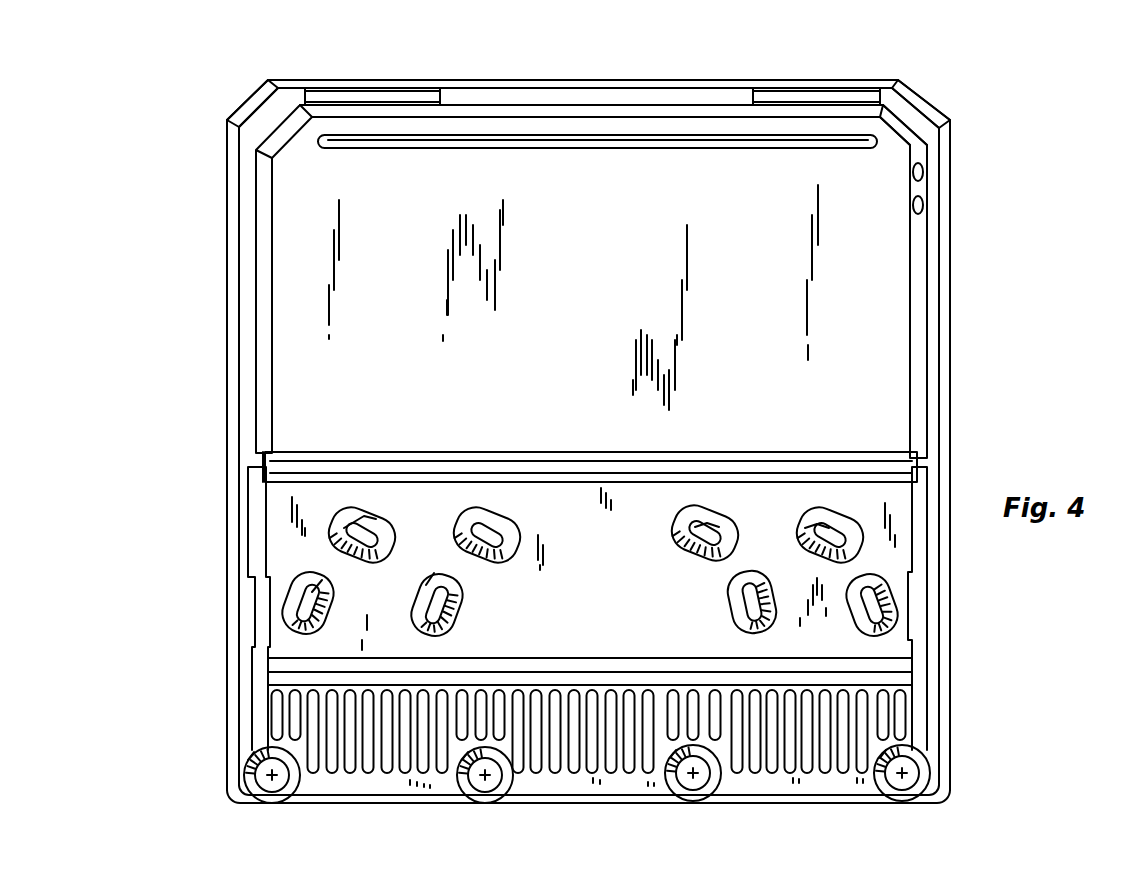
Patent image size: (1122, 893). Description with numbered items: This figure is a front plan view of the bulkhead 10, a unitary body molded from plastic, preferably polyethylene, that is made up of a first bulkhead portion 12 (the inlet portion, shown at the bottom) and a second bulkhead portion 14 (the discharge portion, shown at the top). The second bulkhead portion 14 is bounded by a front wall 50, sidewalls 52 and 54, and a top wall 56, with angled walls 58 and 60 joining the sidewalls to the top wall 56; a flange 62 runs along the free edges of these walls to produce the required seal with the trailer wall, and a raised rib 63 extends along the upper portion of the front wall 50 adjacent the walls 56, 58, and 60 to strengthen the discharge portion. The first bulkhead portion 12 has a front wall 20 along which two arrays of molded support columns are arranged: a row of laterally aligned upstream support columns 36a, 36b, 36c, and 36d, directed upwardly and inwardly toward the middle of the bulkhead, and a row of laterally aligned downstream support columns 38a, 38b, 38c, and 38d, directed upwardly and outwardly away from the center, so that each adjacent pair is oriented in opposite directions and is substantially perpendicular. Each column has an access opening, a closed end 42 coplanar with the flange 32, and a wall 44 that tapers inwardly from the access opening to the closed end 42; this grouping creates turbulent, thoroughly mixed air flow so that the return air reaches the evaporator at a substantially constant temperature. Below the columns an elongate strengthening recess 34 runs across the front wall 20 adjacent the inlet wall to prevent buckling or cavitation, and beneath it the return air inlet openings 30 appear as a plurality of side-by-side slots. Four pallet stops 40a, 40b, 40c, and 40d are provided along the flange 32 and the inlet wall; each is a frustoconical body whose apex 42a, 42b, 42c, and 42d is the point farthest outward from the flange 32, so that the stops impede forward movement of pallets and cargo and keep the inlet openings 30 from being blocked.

The bulkhead 10 is at (655, 67).
The first bulkhead portion 12 is at (192, 582).
The second bulkhead portion 14 is at (194, 263).
The front wall 20 is at (560, 583).
The return air inlet openings 30 is at (388, 768).
The flange 32 is at (232, 511).
The elongate strengthening recess 34 is at (578, 659).
The upstream support column 36a is at (893, 618).
The upstream support column 36b is at (735, 607).
The upstream support column 36c is at (452, 610).
The upstream support column 36d is at (283, 612).
The downstream support column 38a is at (845, 510).
The downstream support column 38b is at (717, 507).
The downstream support column 38c is at (478, 508).
The downstream support column 38d is at (353, 508).
The pallet stop 40a is at (250, 791).
The pallet stop 40b is at (487, 802).
The pallet stop 40c is at (705, 793).
The pallet stop 40d is at (905, 800).
The closed end 42 is at (822, 532).
The apex 42a is at (246, 770).
The apex 42b is at (468, 784).
The apex 42c is at (677, 792).
The apex 42d is at (910, 772).
The wall 44 is at (377, 524).
The front wall 50 is at (575, 293).
The sidewall 52 is at (262, 192).
The sidewall 54 is at (917, 287).
The top wall 56 is at (307, 104).
The angled wall 58 is at (280, 122).
The angled wall 60 is at (895, 117).
The flange 62 is at (925, 100).
The raised rib 63 is at (618, 142).